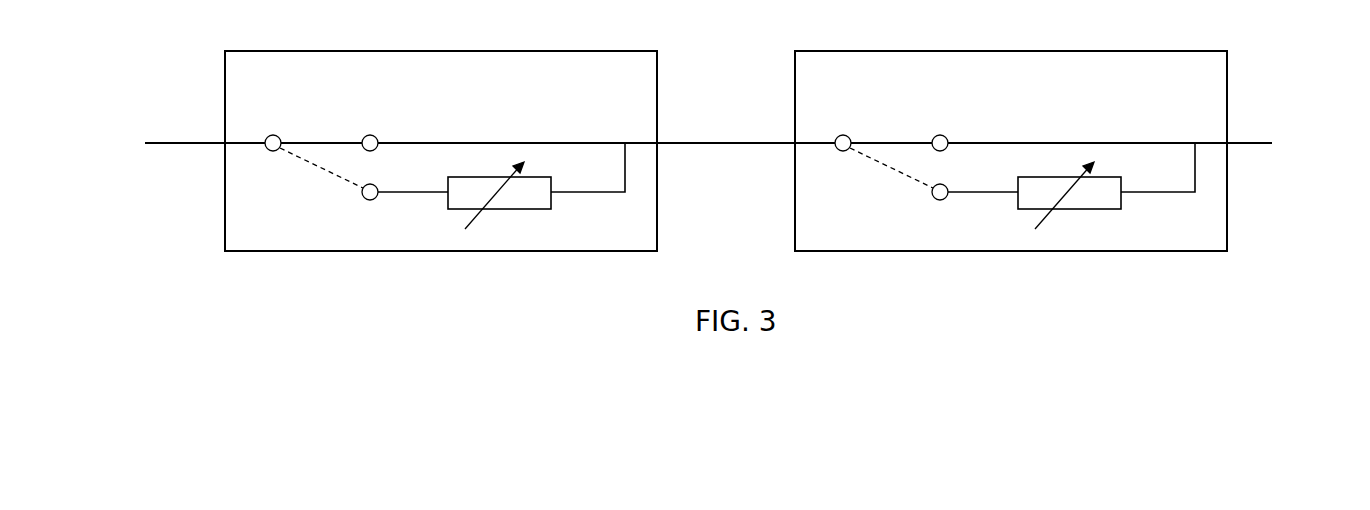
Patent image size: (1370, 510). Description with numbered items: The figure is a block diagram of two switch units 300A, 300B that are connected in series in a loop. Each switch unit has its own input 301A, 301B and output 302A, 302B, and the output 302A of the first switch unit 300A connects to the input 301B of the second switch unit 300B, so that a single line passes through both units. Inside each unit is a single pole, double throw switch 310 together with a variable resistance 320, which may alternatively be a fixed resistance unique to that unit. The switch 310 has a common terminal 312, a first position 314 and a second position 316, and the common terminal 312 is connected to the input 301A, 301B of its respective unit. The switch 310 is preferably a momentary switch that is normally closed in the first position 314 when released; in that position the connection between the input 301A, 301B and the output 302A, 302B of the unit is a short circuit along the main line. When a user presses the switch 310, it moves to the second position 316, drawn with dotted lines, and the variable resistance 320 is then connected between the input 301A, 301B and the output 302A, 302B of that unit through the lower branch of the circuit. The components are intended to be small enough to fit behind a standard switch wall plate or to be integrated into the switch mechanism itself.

The first switch unit 300A is at (477, 94).
The second switch unit 300B is at (1011, 151).
The input of first switch unit 301A is at (225, 143).
The input of second switch unit 301B is at (742, 103).
The output of first switch unit 302A is at (657, 143).
The output of second switch unit 302B is at (1275, 185).
The single pole, double throw switch 310 is at (291, 118).
The common terminal 312 is at (268, 151).
The first position 314 is at (374, 137).
The second position 316 is at (372, 200).
The variable resistance 320 is at (562, 215).